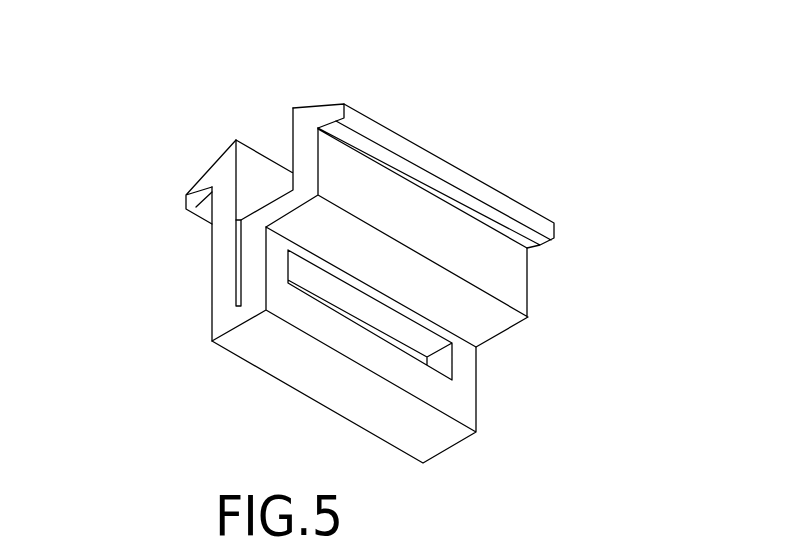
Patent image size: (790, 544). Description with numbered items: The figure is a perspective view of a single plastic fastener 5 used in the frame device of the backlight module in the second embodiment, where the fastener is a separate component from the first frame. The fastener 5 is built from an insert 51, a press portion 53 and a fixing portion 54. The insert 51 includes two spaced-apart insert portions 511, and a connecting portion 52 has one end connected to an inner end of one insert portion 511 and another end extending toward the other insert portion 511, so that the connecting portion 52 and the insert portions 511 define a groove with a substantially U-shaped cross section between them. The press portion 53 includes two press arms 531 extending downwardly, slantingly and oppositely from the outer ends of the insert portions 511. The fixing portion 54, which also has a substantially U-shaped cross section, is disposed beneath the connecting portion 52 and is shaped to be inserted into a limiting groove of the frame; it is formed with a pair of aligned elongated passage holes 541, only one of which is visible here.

The fastener 5 is at (122, 321).
The insert 51 is at (560, 302).
The insert portion 511 is at (222, 240).
The connecting portion 52 is at (272, 200).
The press portion 53 is at (451, 135).
The press arm 531 is at (207, 172).
The fixing portion 54 is at (465, 403).
The passage hole 541 is at (440, 361).